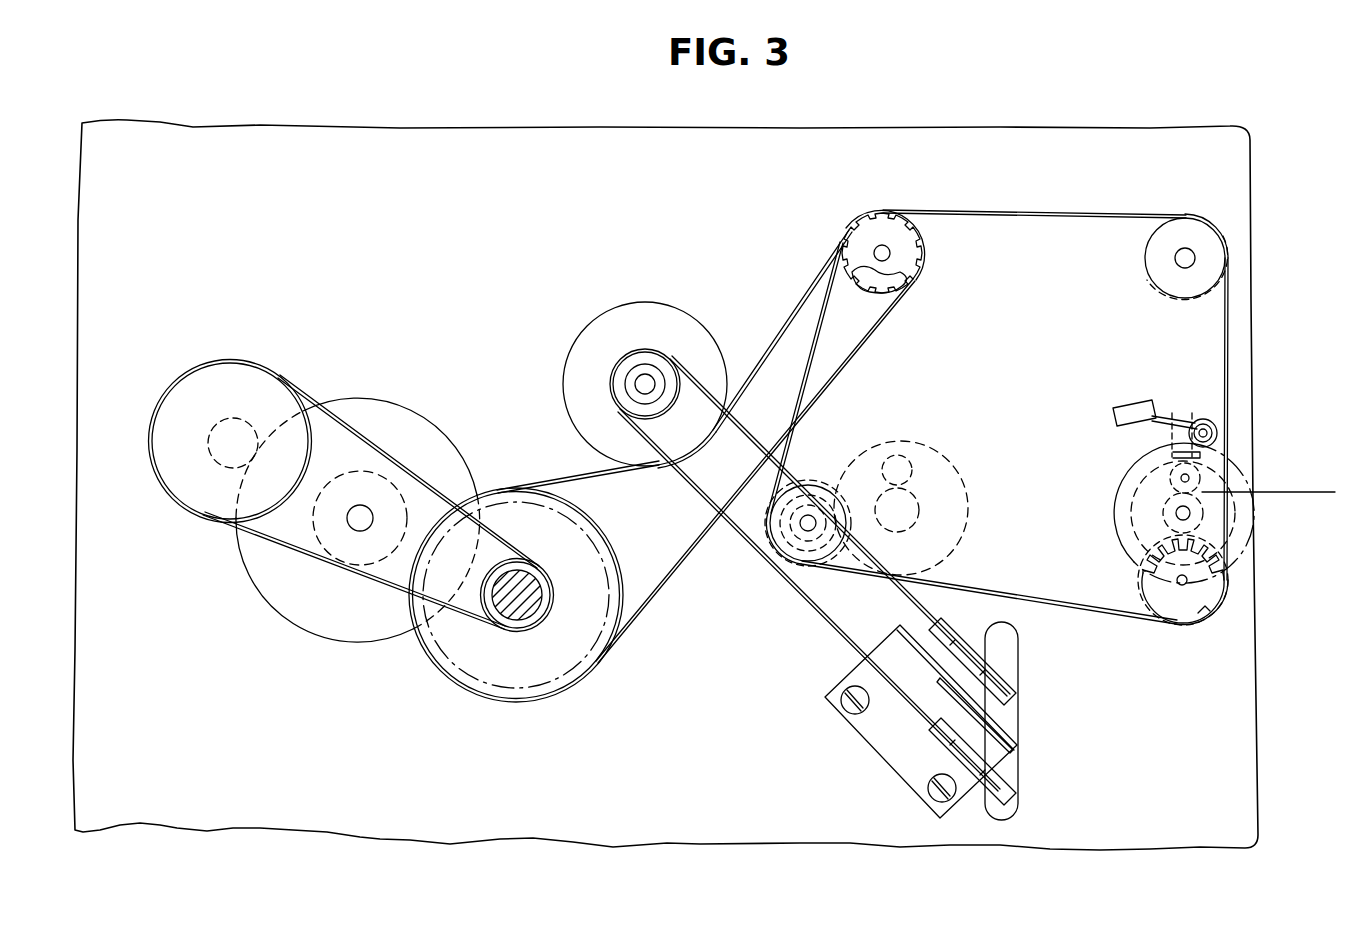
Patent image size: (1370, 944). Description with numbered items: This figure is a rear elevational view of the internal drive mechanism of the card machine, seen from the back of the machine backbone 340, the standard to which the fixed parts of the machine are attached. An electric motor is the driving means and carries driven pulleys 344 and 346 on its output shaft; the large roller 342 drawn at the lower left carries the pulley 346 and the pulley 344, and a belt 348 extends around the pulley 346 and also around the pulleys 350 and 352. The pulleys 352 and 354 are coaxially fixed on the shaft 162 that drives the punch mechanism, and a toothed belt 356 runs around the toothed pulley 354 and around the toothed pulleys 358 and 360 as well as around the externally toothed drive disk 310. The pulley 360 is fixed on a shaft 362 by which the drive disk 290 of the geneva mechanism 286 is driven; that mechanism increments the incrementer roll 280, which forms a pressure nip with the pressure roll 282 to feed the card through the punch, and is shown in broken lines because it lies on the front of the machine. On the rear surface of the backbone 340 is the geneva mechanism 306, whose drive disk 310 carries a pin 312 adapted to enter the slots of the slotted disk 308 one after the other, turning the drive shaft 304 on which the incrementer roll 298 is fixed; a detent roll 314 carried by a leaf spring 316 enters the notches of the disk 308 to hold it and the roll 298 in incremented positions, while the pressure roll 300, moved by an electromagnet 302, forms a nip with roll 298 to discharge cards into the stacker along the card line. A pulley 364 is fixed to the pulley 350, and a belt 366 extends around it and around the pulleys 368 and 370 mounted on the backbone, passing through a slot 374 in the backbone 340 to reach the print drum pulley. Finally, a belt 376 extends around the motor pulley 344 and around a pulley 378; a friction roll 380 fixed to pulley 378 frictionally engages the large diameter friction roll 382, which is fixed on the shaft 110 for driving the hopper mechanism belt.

The shaft 110 is at (355, 508).
The shaft 162 is at (890, 259).
The incrementer roll 280 is at (916, 500).
The pressure roll 282 is at (902, 456).
The geneva mechanism 286 is at (968, 522).
The drive disk 290 is at (783, 550).
The incrementer roll 298 is at (1128, 481).
The pressure roll 300 is at (1150, 458).
The electromagnet 302 is at (1190, 408).
The drive shaft 304 is at (1175, 513).
The geneva mechanism 306 is at (1209, 615).
The slotted disk 308 is at (1120, 546).
The drive disk 310 is at (1160, 590).
The pin 312 is at (1182, 588).
The detent roll 314 is at (1218, 432).
The leaf spring 316 is at (1146, 406).
The machine backbone 340 is at (985, 152).
The roller 342 is at (472, 678).
The driven pulley 344 is at (530, 608).
The driven pulley 346 is at (596, 524).
The belt 348 is at (540, 470).
The pulley 350 is at (580, 334).
The pulley 352 is at (900, 250).
The pulley 354 is at (866, 284).
The toothed belt 356 is at (1044, 216).
The pulley 358 is at (1160, 265).
The pulley 360 is at (812, 484).
The shaft 362 is at (800, 523).
The pulley 364 is at (662, 368).
The belt 366 is at (824, 616).
The pulley 368 is at (966, 636).
The pulley 370 is at (940, 742).
The slot 374 is at (1010, 640).
The belt 376 is at (312, 398).
The pulley 378 is at (250, 404).
The friction roll 380 is at (218, 462).
The large diameter friction roll 382 is at (430, 420).